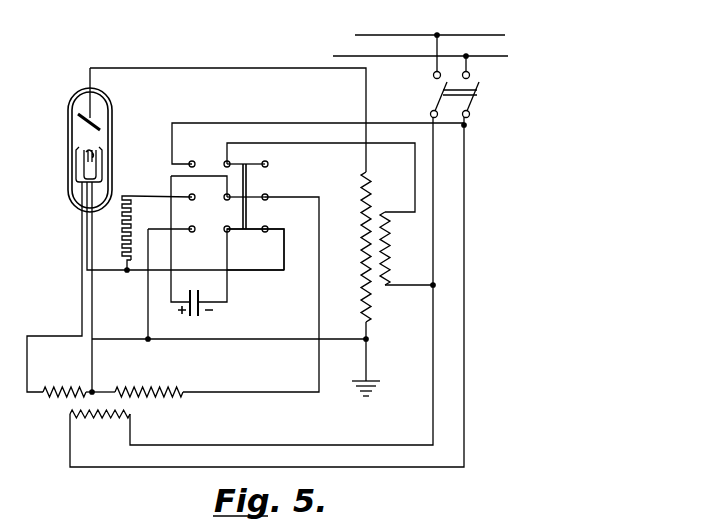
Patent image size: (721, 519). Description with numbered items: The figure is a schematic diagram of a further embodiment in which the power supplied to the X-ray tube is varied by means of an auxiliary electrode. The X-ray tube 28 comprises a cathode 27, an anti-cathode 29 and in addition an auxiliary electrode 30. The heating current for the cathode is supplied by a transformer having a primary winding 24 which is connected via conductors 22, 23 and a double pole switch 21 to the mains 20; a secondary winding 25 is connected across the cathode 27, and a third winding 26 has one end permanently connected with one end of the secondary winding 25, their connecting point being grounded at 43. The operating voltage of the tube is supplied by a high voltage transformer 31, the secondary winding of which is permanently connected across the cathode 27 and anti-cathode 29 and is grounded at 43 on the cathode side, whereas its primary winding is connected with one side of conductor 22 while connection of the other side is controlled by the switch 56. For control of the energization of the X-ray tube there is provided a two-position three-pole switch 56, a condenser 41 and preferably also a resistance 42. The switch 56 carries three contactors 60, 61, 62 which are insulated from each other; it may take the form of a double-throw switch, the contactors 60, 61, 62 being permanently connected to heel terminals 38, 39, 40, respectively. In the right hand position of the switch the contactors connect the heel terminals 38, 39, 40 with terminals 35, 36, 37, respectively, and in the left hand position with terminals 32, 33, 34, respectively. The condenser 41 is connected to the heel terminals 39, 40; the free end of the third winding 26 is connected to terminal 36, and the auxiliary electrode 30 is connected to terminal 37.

The mains 20 is at (432, 45).
The double pole switch 21 is at (470, 94).
The conductor 22 is at (433, 160).
The conductor 23 is at (464, 199).
The primary winding 24 is at (98, 418).
The secondary winding 25 is at (58, 390).
The third winding 26 is at (148, 391).
The cathode 27 is at (80, 178).
The X-ray tube 28 is at (69, 128).
The anti-cathode 29 is at (72, 103).
The auxiliary electrode 30 is at (76, 163).
The high voltage transformer 31 is at (373, 278).
The terminal 32 is at (192, 153).
The terminal 33 is at (189, 196).
The terminal 34 is at (193, 232).
The terminal 35 is at (268, 164).
The terminal 36 is at (268, 197).
The terminal 37 is at (268, 229).
The heel terminal 38 is at (227, 161).
The heel terminal 39 is at (213, 206).
The heel terminal 40 is at (229, 231).
The condenser 41 is at (200, 314).
The resistance 42 is at (122, 233).
The ground 43 is at (368, 368).
The two-position three-pole switch 56 is at (247, 181).
The contactor 60 is at (258, 163).
The contactor 61 is at (255, 200).
The contactor 62 is at (243, 238).